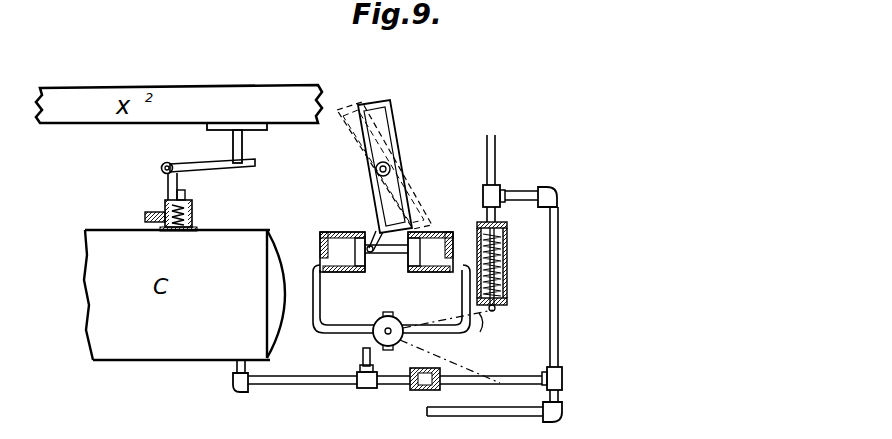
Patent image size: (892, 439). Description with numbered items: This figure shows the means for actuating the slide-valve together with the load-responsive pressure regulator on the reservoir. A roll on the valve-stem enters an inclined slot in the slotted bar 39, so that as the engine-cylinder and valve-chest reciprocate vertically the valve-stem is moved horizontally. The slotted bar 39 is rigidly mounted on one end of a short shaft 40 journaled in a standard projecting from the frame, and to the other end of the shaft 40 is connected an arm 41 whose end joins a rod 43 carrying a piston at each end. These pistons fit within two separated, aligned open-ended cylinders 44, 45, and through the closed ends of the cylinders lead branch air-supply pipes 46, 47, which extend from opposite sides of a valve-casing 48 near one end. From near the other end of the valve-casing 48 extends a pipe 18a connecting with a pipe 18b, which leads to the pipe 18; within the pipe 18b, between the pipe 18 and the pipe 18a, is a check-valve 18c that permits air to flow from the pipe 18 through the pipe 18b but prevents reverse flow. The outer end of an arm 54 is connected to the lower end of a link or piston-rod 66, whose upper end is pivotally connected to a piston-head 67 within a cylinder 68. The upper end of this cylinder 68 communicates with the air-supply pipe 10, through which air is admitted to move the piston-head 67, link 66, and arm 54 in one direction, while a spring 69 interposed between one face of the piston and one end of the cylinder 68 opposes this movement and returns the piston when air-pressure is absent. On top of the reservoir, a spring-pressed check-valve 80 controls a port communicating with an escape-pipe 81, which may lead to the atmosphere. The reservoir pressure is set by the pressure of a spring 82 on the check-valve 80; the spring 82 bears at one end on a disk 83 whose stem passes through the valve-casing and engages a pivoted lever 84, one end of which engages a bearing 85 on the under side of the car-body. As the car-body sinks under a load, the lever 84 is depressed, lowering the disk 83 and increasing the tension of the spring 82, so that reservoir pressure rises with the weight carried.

The air-supply pipe 10 is at (520, 178).
The pipe 18 is at (558, 336).
The pipe 18a is at (351, 366).
The pipe 18b is at (532, 368).
The check-valve 18c is at (416, 391).
The slotted bar 39 is at (398, 124).
The short shaft 40 is at (391, 168).
The arm 41 is at (372, 214).
The rod 43 is at (400, 257).
The cylinder 44 is at (340, 232).
The cylinder 45 is at (435, 232).
The branch air-supply pipe 46 is at (391, 299).
The branch air-supply pipe 47 is at (467, 295).
The valve-casing 48 is at (395, 323).
The arm 54 is at (450, 346).
The link or piston-rod 66 is at (496, 311).
The piston-head 67 is at (507, 231).
The cylinder 68 is at (505, 273).
The spring 69 is at (507, 300).
The spring-pressed check-valve 80 is at (192, 225).
The escape-pipe 81 is at (146, 215).
The spring 82 is at (191, 208).
The disk 83 is at (167, 198).
The pivoted lever 84 is at (250, 164).
The bearing 85 is at (242, 149).